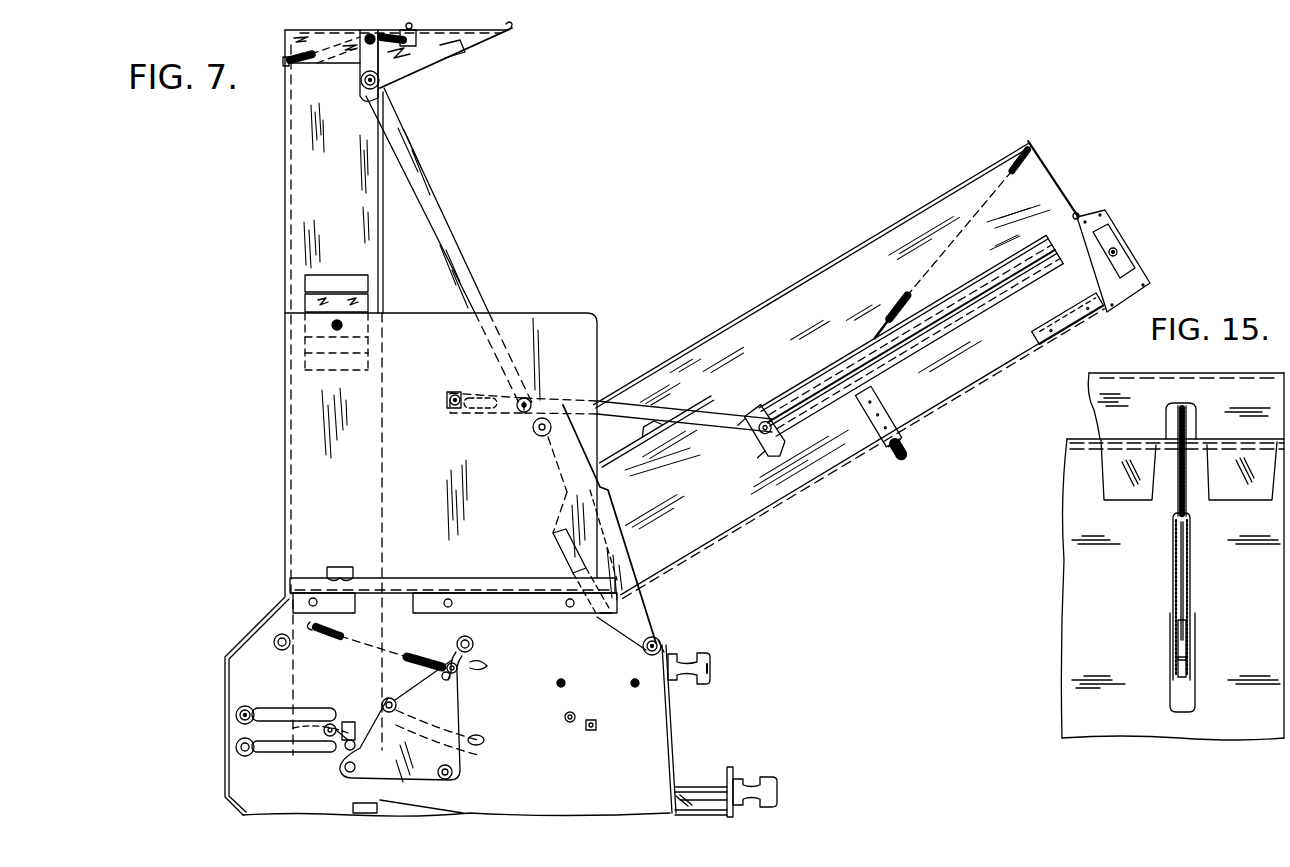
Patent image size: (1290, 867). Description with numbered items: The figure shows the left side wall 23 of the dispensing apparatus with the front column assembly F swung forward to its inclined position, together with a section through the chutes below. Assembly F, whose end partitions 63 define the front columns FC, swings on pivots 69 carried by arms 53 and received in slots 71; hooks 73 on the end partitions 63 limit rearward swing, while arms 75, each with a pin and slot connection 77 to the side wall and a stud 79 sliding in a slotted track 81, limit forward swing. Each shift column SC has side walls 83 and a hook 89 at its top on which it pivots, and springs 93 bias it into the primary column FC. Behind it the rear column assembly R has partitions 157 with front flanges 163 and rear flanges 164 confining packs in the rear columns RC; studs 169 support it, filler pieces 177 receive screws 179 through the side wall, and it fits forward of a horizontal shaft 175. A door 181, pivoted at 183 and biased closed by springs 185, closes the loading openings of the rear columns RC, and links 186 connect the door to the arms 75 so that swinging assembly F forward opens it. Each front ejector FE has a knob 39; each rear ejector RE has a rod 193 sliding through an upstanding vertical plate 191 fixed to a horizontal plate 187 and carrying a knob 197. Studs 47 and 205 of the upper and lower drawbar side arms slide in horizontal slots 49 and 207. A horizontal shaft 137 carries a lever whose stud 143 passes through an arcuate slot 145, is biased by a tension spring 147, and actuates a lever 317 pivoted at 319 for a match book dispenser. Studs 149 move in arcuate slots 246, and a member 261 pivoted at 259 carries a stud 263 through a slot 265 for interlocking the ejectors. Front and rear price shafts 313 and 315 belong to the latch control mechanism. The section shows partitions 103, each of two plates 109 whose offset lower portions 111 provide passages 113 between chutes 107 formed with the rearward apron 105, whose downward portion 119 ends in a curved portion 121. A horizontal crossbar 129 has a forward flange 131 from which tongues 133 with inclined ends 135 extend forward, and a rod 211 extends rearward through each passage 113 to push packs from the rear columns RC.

In FIG. 7, the rear column assembly R is at (281, 143).
In FIG. 7, the partitions 157 is at (312, 172).
In FIG. 7, the rearward flanges 164 is at (290, 197).
In FIG. 7, the rear columns RC is at (305, 232).
In FIG. 7, the front flanges 163 is at (382, 238).
In FIG. 7, the door 181 is at (480, 32).
In FIG. 7, the pivot 183 is at (396, 43).
In FIG. 7, the springs 185 is at (290, 64).
In FIG. 7, the links 186 is at (436, 203).
In FIG. 7, the left side wall 23 is at (512, 318).
In FIG. 7, the filler pieces 177 is at (318, 299).
In FIG. 7, the screws 179 is at (332, 325).
In FIG. 7, the pin and slot connection 77 is at (459, 410).
In FIG. 7, the arms 75 is at (668, 410).
In FIG. 7, the slots 71 is at (650, 638).
In FIG. 7, the arms 53 is at (641, 600).
In FIG. 7, the pivots 69 is at (662, 642).
In FIG. 7, the end partitions 63 is at (745, 512).
In FIG. 7, the side walls 83 is at (799, 283).
In FIG. 7, the shift column SC is at (1038, 150).
In FIG. 7, the front column assembly F is at (1112, 218).
In FIG. 7, the hook 89 is at (1078, 213).
In FIG. 7, the slotted track 81 is at (920, 358).
In FIG. 7, the stud 79 is at (765, 412).
In FIG. 7, the springs 93 is at (906, 310).
In FIG. 7, the hooks 73 is at (895, 450).
In FIG. 7, the front columns FC is at (985, 383).
In FIG. 7, the studs 169 is at (340, 567).
In FIG. 7, the horizontal shaft 175 is at (276, 637).
In FIG. 7, the tension spring 147 is at (421, 655).
In FIG. 7, the horizontal shaft 137 is at (470, 642).
In FIG. 7, the stud 143 is at (455, 678).
In FIG. 7, the arcuate slot 145 is at (488, 665).
In FIG. 7, the lever 317 is at (390, 775).
In FIG. 7, the pivot 319 is at (453, 776).
In FIG. 7, the studs 149 is at (398, 693).
In FIG. 7, the arcuate slots 246 is at (479, 740).
In FIG. 7, the stud 47 is at (245, 706).
In FIG. 7, the horizontal slot 49 is at (277, 708).
In FIG. 7, the stud 205 is at (245, 757).
In FIG. 7, the horizontal slot 207 is at (283, 757).
In FIG. 7, the pivot 259 is at (296, 731).
In FIG. 7, the slot 265 is at (343, 718).
In FIG. 7, the stud 263 is at (353, 720).
In FIG. 7, the link 261 is at (338, 745).
In FIG. 7, the rear price shaft 315 is at (573, 713).
In FIG. 7, the front price shaft 313 is at (597, 726).
In FIG. 7, the knob 39 is at (692, 682).
In FIG. 7, the front column ejectors FE is at (714, 662).
In FIG. 7, the rod 193 is at (705, 790).
In FIG. 7, the upstanding vertical plate 191 is at (728, 770).
In FIG. 7, the knob 197 is at (752, 783).
In FIG. 7, the rear column ejectors RE is at (779, 782).
In FIG. 7, the horizontal plate 187 is at (678, 800).
In FIG. 15, the horizontal crossbar 129 is at (1118, 372).
In FIG. 15, the forward flange 131 is at (1102, 409).
In FIG. 15, the plates 109 is at (1166, 408).
In FIG. 15, the tongues 133 is at (1128, 440).
In FIG. 15, the rearward apron 105 is at (1068, 646).
In FIG. 15, the forward end portion 135 is at (1110, 480).
In FIG. 15, the partitions 103 is at (1170, 511).
In FIG. 15, the lower portions 111 is at (1174, 576).
In FIG. 15, the chutes 107 is at (1124, 606).
In FIG. 15, the downward portion 119 is at (1170, 659).
In FIG. 15, the rod 211 is at (1172, 646).
In FIG. 15, the passages 113 is at (1186, 680).
In FIG. 15, the curved portion 121 is at (1136, 740).